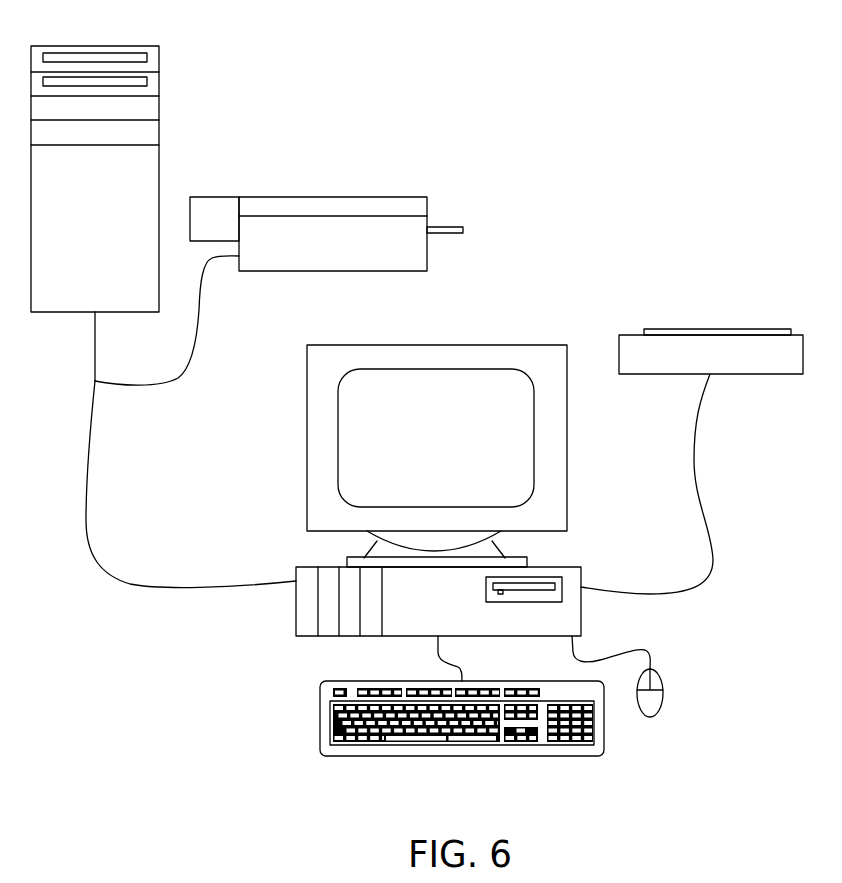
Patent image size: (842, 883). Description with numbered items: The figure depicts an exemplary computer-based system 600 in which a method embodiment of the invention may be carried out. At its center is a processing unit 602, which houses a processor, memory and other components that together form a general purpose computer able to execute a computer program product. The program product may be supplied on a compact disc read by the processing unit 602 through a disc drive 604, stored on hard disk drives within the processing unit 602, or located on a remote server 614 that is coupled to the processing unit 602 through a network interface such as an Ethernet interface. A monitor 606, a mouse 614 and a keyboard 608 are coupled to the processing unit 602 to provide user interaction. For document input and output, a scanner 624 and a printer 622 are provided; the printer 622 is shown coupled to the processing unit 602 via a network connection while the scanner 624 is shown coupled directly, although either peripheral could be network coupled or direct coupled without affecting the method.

The computer-based system 600 is at (608, 107).
The processing unit 602 is at (296, 620).
The disc drive 604 is at (562, 590).
The monitor 606 is at (517, 345).
The keyboard 608 is at (320, 720).
The server / mouse 614 is at (160, 172).
The printer 622 is at (380, 197).
The scanner 624 is at (740, 328).